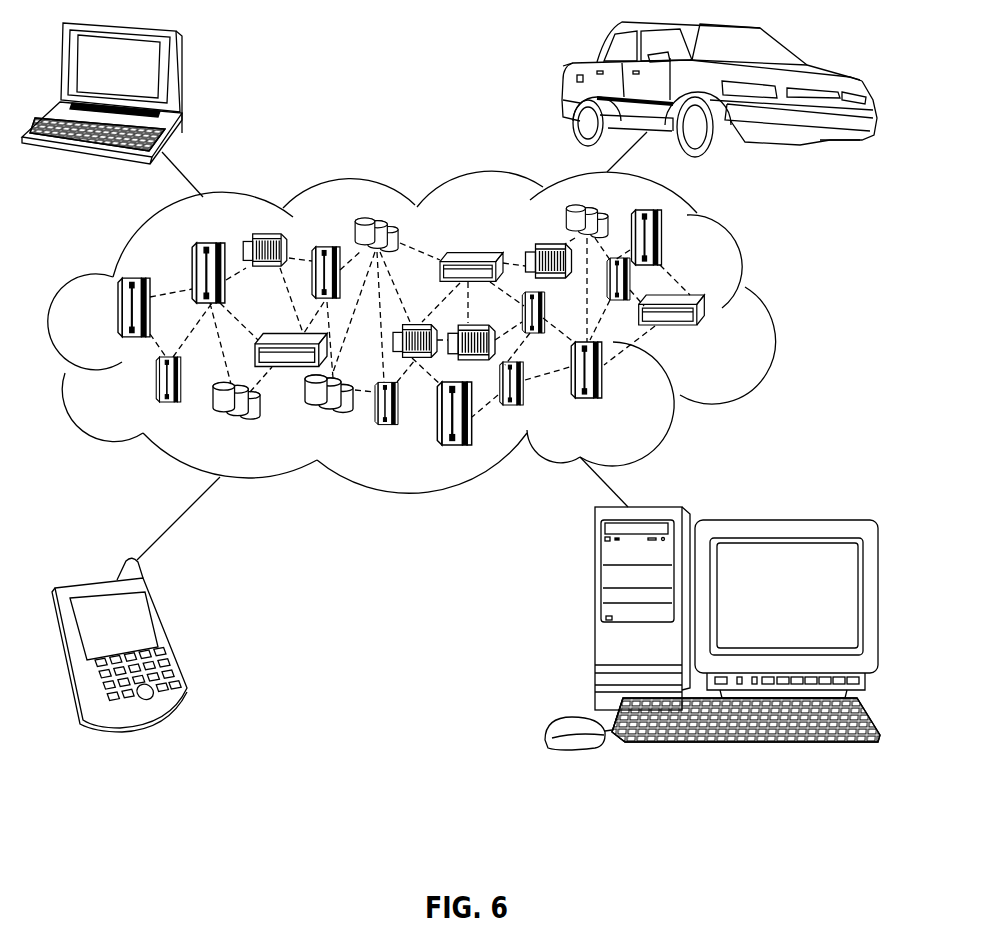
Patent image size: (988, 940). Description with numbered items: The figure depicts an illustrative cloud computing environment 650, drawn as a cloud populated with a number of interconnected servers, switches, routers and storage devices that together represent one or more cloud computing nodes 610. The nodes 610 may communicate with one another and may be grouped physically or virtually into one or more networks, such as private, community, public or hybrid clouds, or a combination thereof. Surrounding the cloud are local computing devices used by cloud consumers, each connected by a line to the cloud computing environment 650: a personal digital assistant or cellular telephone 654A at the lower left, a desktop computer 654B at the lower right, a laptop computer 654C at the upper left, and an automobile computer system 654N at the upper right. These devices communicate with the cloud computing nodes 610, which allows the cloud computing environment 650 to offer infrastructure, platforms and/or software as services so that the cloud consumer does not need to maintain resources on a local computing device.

The cloud computing environment 650 is at (750, 270).
The cloud computing nodes 610 is at (737, 334).
The personal digital assistant (PDA) or cellular telephone 654A is at (168, 635).
The desktop computer 654B is at (595, 617).
The laptop computer 654C is at (180, 68).
The automobile computer system 654N is at (568, 77).